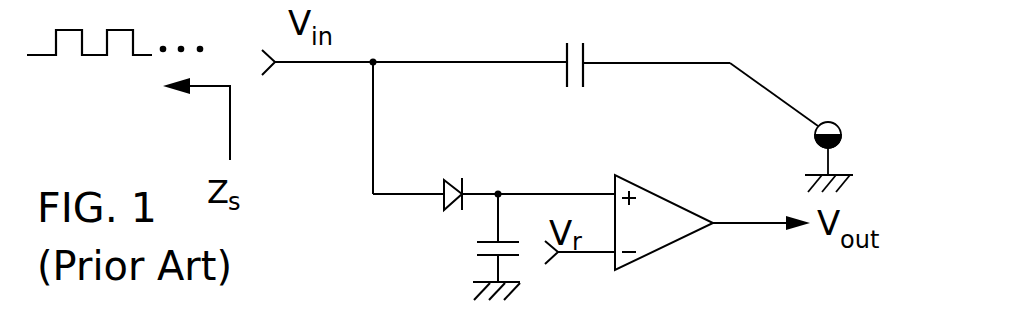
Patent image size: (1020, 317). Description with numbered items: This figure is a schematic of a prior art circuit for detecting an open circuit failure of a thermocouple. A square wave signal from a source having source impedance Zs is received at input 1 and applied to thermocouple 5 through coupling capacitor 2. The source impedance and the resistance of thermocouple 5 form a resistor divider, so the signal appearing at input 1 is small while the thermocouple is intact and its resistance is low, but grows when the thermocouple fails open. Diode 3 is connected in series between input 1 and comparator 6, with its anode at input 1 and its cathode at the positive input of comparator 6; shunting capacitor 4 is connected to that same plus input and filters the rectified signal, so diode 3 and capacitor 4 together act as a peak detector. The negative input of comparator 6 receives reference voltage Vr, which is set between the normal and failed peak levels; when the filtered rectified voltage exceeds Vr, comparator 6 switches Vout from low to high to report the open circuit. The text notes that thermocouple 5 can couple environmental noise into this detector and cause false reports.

The input 1 is at (290, 63).
The coupling capacitor 2 is at (573, 42).
The diode 3 is at (457, 178).
The shunting capacitor 4 is at (470, 247).
The thermocouple 5 is at (843, 112).
The comparator 6 is at (668, 198).